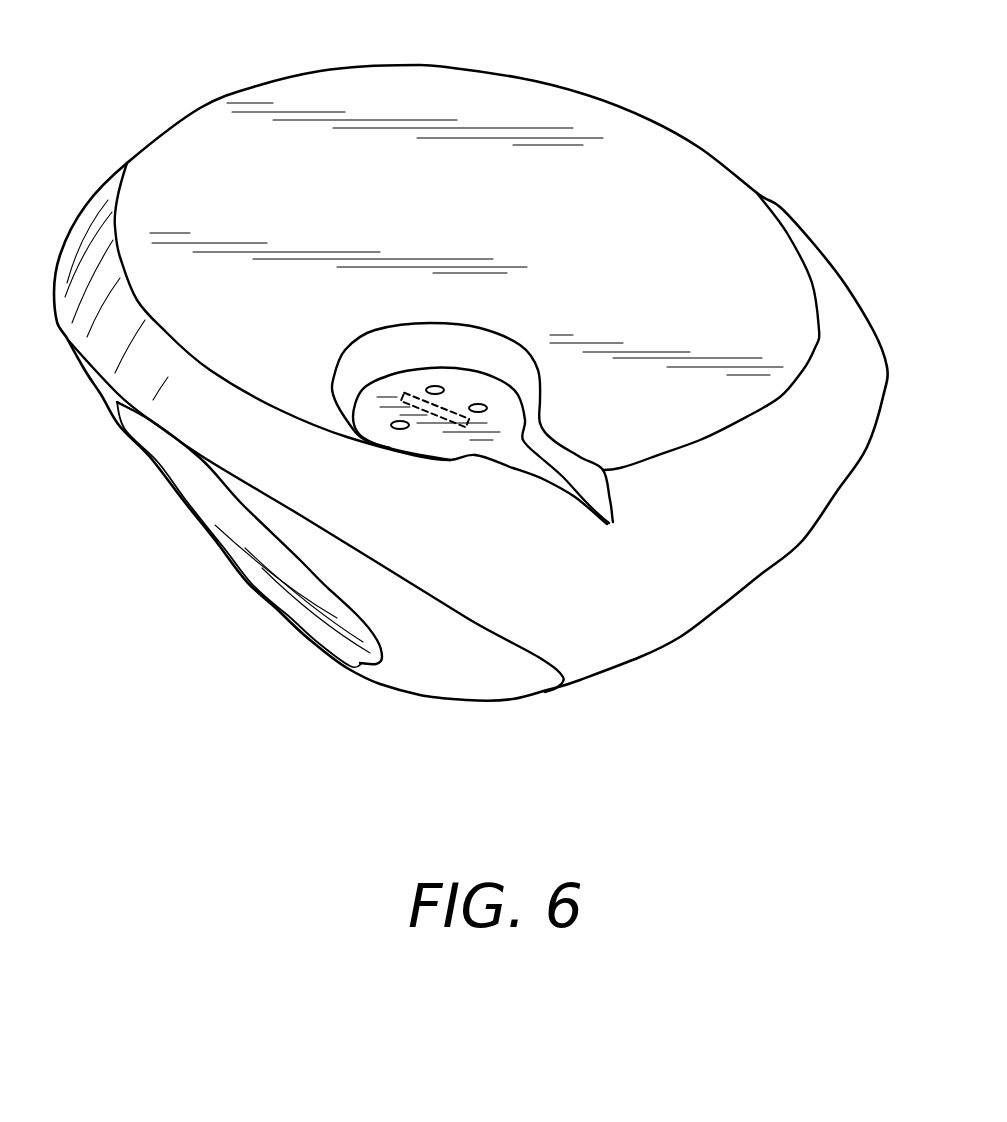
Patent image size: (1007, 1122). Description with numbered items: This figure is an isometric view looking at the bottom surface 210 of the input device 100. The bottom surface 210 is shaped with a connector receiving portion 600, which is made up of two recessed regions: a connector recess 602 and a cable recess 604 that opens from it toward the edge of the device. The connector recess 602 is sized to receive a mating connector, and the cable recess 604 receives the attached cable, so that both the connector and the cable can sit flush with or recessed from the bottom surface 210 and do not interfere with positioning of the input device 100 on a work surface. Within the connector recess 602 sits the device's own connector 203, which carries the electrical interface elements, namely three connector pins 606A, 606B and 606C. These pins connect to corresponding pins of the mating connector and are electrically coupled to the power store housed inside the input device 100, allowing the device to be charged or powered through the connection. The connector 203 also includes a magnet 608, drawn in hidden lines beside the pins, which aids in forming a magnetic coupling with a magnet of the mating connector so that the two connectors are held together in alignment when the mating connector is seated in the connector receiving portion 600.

The input device 100 is at (683, 113).
The bottom surface 210 is at (303, 190).
The connector 203 is at (377, 397).
The connector receiving portion 600 is at (507, 336).
The connector recess 602 is at (400, 323).
The cable recess 604 is at (540, 462).
The connector pin 606A is at (398, 432).
The connector pin 606B is at (440, 386).
The connector pin 606C is at (489, 404).
The magnet 608 is at (440, 420).